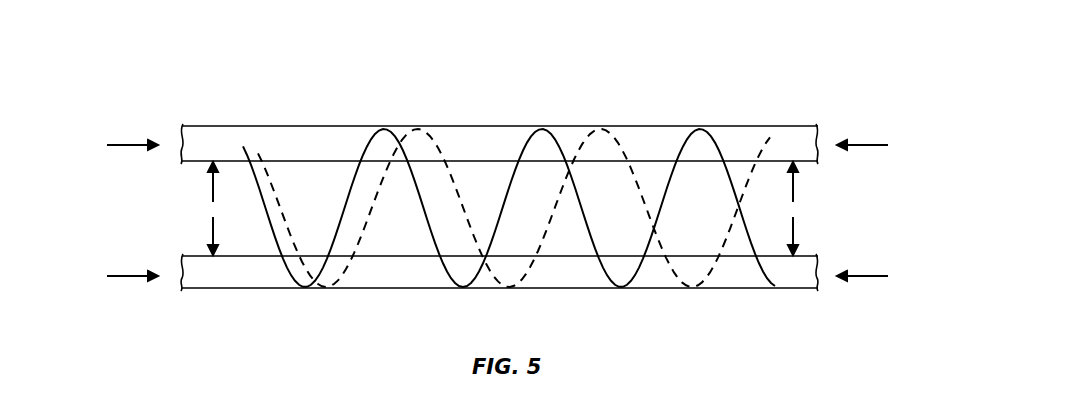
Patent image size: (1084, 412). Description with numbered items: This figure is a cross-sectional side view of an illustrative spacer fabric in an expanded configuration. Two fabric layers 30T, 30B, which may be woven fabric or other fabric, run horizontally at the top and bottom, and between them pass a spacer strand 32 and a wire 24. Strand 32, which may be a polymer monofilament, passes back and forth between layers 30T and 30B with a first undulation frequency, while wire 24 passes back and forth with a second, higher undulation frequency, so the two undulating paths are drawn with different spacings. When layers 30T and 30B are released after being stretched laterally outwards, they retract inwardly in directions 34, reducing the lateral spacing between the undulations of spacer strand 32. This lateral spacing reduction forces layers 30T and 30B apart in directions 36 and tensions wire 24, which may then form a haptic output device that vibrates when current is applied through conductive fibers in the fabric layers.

The wire 24 is at (348, 172).
The spacer strand 32 is at (448, 173).
The fabric layer 30T is at (654, 138).
The fabric layer 30B is at (741, 290).
The directions 34 is at (130, 148).
The directions 36 is at (211, 190).